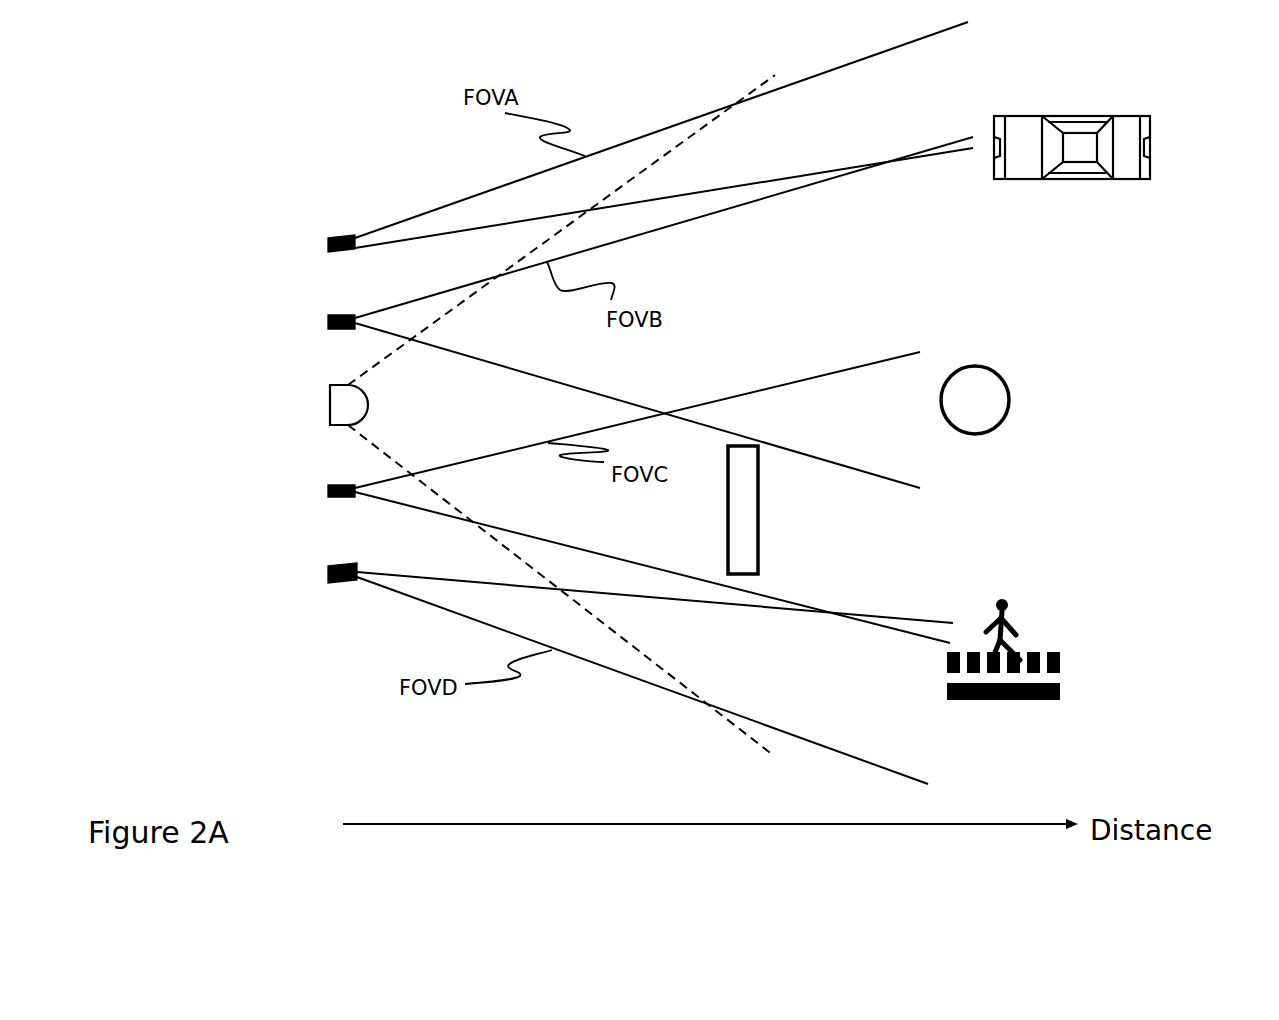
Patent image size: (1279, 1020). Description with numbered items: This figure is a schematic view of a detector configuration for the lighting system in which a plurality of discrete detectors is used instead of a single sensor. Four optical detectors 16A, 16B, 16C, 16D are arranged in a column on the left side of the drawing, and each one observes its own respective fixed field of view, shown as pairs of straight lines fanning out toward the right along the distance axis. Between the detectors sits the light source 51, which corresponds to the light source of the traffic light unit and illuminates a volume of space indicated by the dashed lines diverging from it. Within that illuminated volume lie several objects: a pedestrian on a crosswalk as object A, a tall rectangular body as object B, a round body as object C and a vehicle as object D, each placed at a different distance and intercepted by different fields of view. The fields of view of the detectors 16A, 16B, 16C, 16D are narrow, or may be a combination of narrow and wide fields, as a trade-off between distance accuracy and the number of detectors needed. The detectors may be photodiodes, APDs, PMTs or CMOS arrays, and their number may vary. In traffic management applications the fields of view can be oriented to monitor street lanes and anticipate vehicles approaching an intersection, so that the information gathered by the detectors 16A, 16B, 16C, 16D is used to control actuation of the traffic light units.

The optical detector 16A is at (330, 241).
The optical detector 16B is at (330, 322).
The optical detector 16C is at (330, 491).
The optical detector 16D is at (330, 571).
The light source 51 is at (330, 407).
The object A is at (1020, 623).
The object B is at (760, 508).
The object C is at (977, 434).
The object D is at (1152, 147).